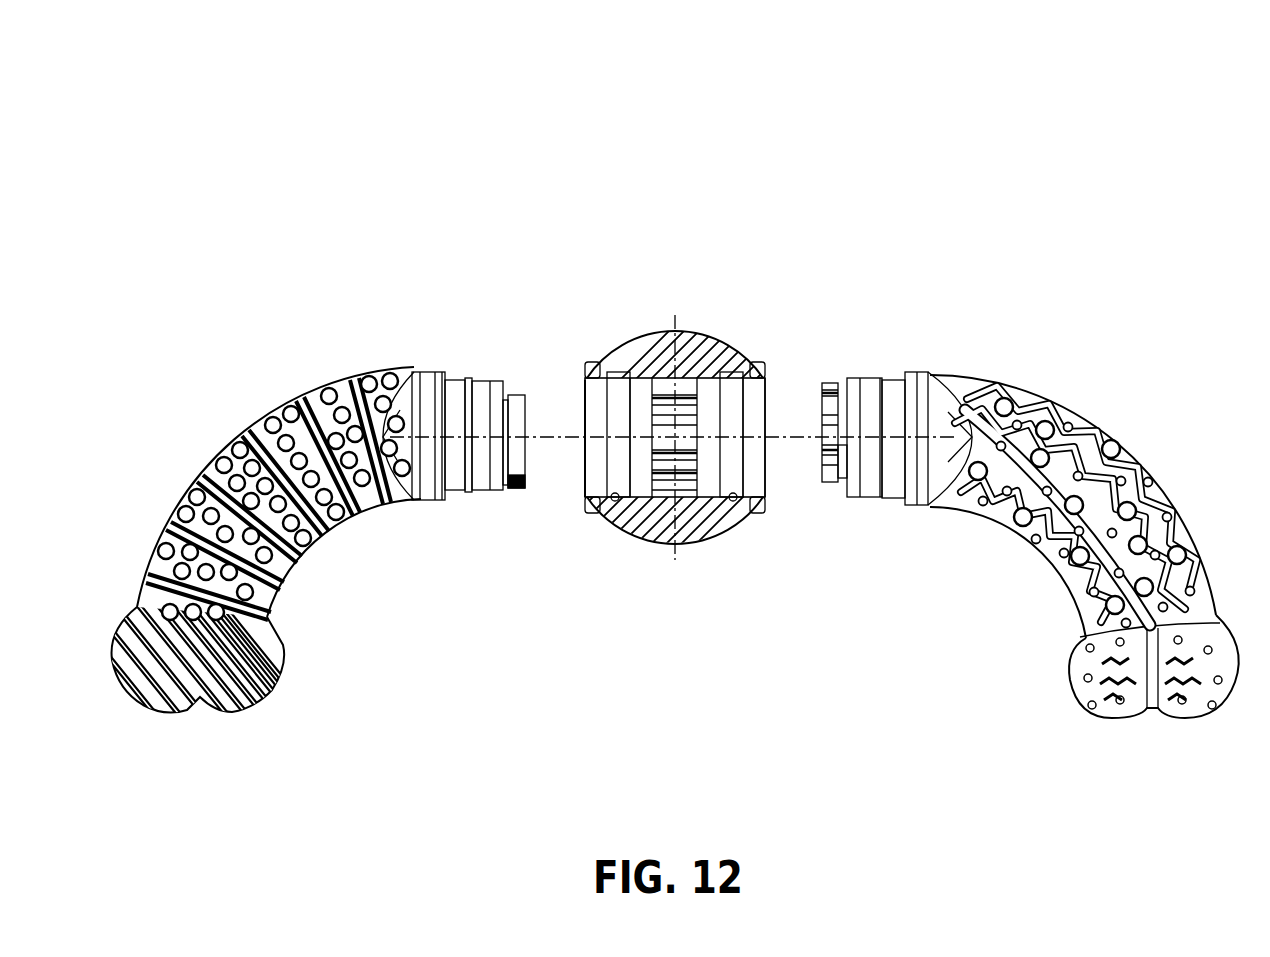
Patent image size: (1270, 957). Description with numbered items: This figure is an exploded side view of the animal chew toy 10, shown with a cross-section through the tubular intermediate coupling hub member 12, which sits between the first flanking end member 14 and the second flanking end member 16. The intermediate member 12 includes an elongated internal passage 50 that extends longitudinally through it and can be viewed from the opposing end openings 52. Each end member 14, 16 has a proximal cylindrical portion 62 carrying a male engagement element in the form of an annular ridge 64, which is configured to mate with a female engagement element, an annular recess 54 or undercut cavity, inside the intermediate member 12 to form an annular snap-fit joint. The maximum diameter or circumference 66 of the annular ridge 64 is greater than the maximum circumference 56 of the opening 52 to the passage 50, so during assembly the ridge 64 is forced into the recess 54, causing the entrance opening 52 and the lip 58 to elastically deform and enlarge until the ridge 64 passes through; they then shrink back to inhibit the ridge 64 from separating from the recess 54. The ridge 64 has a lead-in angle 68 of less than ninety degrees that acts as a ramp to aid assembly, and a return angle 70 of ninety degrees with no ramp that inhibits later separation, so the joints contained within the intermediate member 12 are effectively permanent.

The animal chew toy 10 is at (233, 92).
The intermediate coupling hub member 12 is at (667, 228).
The first flanking end member 14 is at (342, 230).
The second flanking end member 16 is at (995, 230).
The elongated internal passage 50 is at (705, 477).
The end opening 52 is at (585, 377).
The annular recess 54 is at (617, 500).
The maximum circumference of the opening 56 is at (770, 378).
The lip 58 is at (592, 508).
The proximal cylindrical portion 62 is at (477, 477).
The annular ridge 64 is at (463, 360).
The maximum diameter/circumference of the annular ridge 66 is at (840, 332).
The lead-in angle 68 is at (472, 377).
The return angle 70 is at (457, 490).